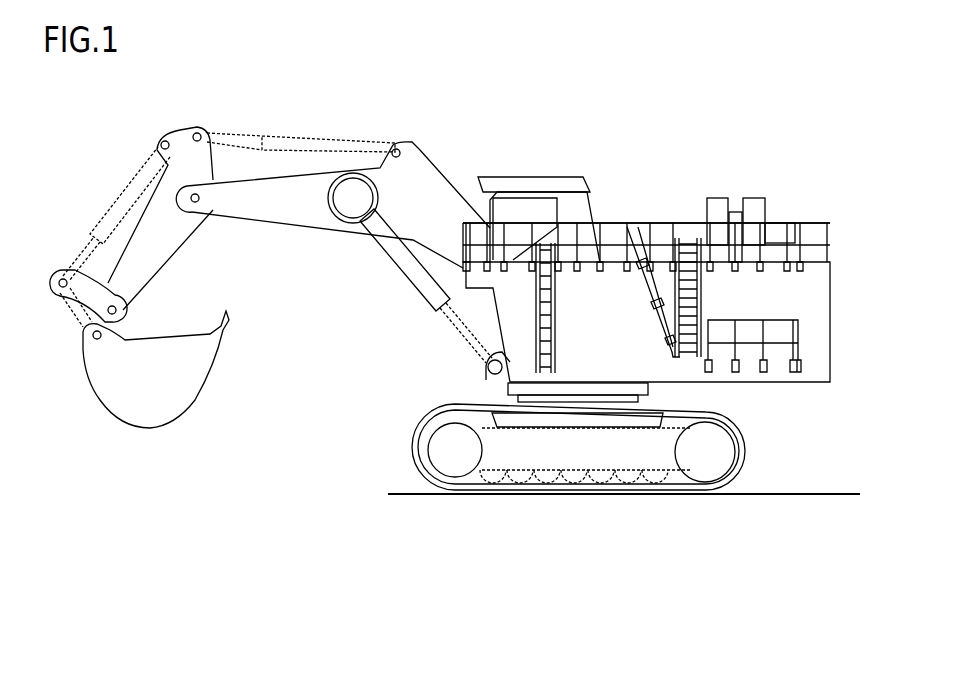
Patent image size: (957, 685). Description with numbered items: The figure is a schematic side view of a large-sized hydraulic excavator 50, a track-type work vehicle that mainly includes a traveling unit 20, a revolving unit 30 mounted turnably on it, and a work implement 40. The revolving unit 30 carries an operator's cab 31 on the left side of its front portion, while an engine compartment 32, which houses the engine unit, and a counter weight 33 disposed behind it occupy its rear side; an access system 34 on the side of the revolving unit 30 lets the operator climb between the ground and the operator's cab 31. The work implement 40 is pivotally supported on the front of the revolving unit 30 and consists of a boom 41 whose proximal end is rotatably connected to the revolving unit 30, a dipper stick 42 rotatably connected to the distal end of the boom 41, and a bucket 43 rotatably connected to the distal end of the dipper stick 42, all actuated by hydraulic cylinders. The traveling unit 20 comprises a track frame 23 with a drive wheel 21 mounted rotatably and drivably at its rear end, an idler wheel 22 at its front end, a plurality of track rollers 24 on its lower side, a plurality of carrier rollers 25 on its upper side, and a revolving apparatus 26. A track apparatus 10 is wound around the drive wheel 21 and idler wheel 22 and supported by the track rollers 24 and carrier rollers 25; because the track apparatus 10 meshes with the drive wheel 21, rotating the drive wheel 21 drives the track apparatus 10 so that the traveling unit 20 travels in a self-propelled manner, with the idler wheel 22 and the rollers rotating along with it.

The track apparatus 10 is at (733, 432).
The traveling unit 20 is at (763, 460).
The drive wheel 21 is at (705, 470).
The idler wheel 22 is at (450, 480).
The track frame 23 is at (575, 455).
The track rollers 24 is at (655, 478).
The carrier rollers 25 is at (647, 420).
The revolving apparatus 26 is at (513, 399).
The revolving unit 30 is at (848, 244).
The operator's cab 31 is at (560, 178).
The engine compartment 32 is at (748, 295).
The counter weight 33 is at (833, 331).
The access system 34 is at (691, 235).
The work implement 40 is at (112, 167).
The boom 41 is at (296, 207).
The dipper stick 42 is at (165, 243).
The bucket 43 is at (178, 383).
The hydraulic excavator 50 is at (533, 120).